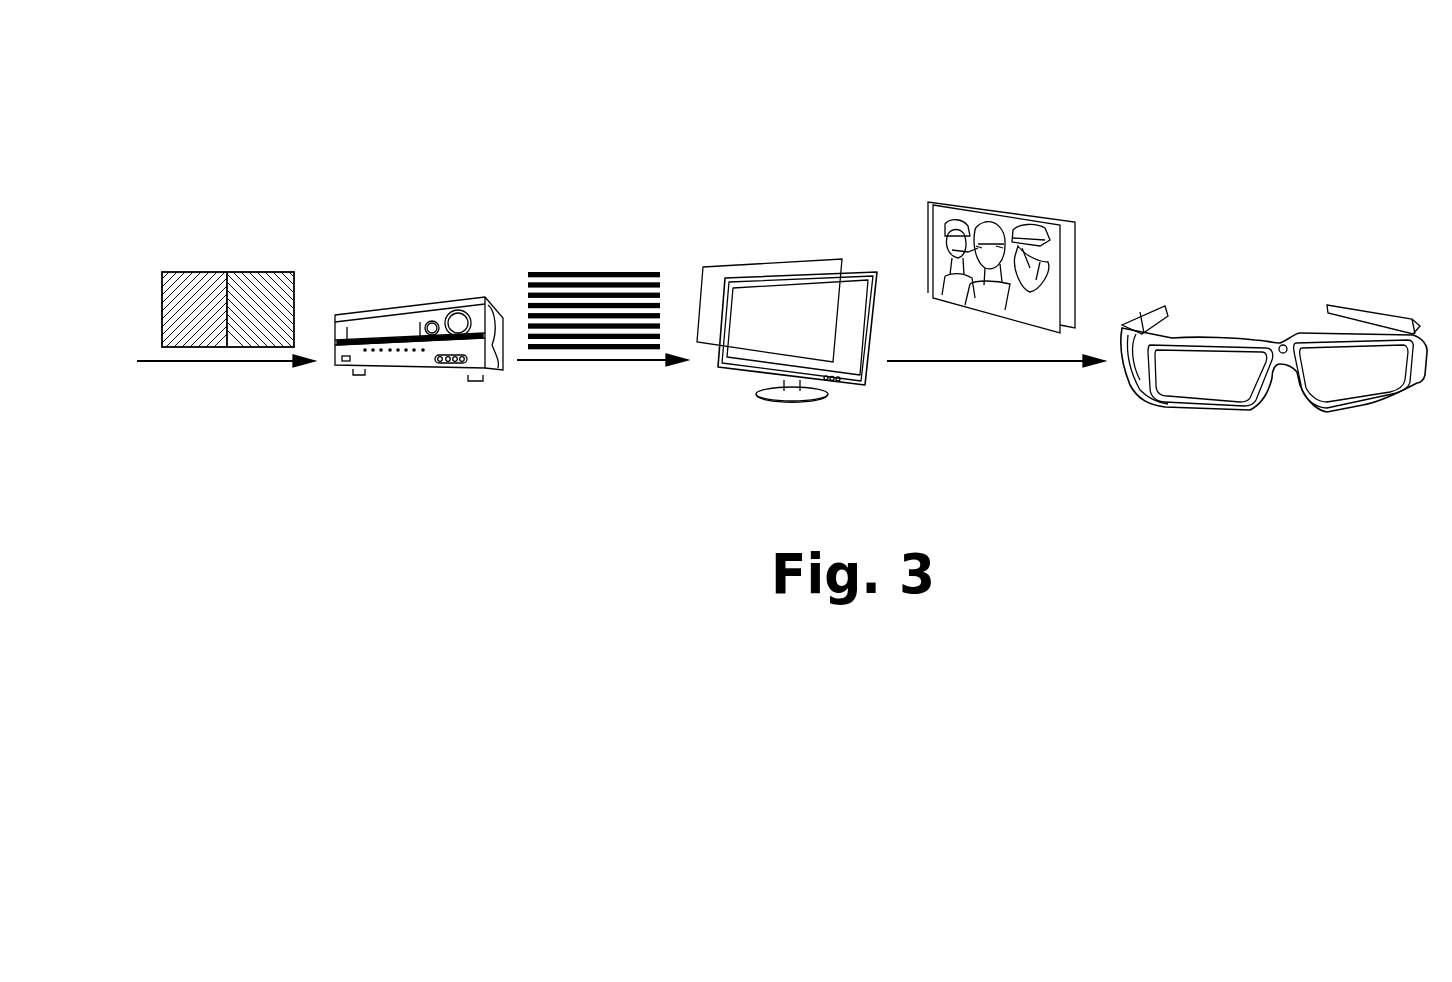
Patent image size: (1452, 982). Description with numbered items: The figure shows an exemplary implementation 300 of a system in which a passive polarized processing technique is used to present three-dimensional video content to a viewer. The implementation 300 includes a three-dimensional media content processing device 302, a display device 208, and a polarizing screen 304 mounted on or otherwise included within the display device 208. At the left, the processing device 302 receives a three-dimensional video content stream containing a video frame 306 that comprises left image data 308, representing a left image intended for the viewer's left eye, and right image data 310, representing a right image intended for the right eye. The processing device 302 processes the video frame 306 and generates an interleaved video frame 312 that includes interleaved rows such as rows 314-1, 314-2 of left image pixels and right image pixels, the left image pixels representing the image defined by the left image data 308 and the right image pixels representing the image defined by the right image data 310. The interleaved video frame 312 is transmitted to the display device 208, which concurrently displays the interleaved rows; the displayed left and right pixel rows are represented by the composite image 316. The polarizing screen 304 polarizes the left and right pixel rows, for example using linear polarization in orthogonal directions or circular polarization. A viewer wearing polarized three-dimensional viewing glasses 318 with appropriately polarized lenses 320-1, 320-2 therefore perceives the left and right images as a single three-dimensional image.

The implementation 300 is at (227, 118).
The video frame 306 is at (294, 268).
The left image data 308 is at (192, 348).
The right image data 310 is at (265, 348).
The 3D media content processing device 302 is at (394, 311).
The interleaved video frame 312 is at (598, 349).
The row 314-1 is at (670, 267).
The row 314-2 is at (660, 283).
The polarizing screen 304 is at (745, 263).
The display device 208 is at (865, 386).
The composite image 316 is at (1018, 212).
The polarized 3D viewing glasses 318 is at (1368, 310).
The lens 320-1 is at (1215, 390).
The lens 320-2 is at (1350, 390).